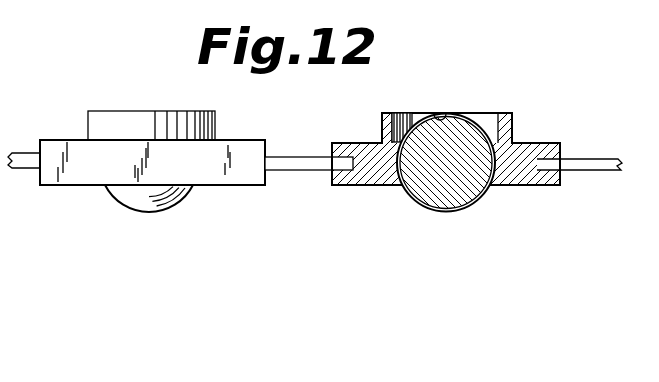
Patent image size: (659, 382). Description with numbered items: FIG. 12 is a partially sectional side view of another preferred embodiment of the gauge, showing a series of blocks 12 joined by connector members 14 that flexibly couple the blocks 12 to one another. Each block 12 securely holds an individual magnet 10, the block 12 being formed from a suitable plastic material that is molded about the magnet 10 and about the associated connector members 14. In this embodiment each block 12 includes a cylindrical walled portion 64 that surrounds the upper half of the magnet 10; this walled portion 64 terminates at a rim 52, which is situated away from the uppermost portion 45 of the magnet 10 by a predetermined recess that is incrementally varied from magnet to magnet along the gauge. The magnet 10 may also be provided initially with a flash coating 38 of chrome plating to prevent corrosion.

The magnet 10 is at (480, 161).
The block 12 is at (532, 143).
The connector member 14 is at (306, 171).
The flash coating 38 is at (482, 200).
The uppermost portion 45 is at (438, 112).
The rim 52 is at (508, 114).
The cylindrical walled portion 64 is at (382, 122).